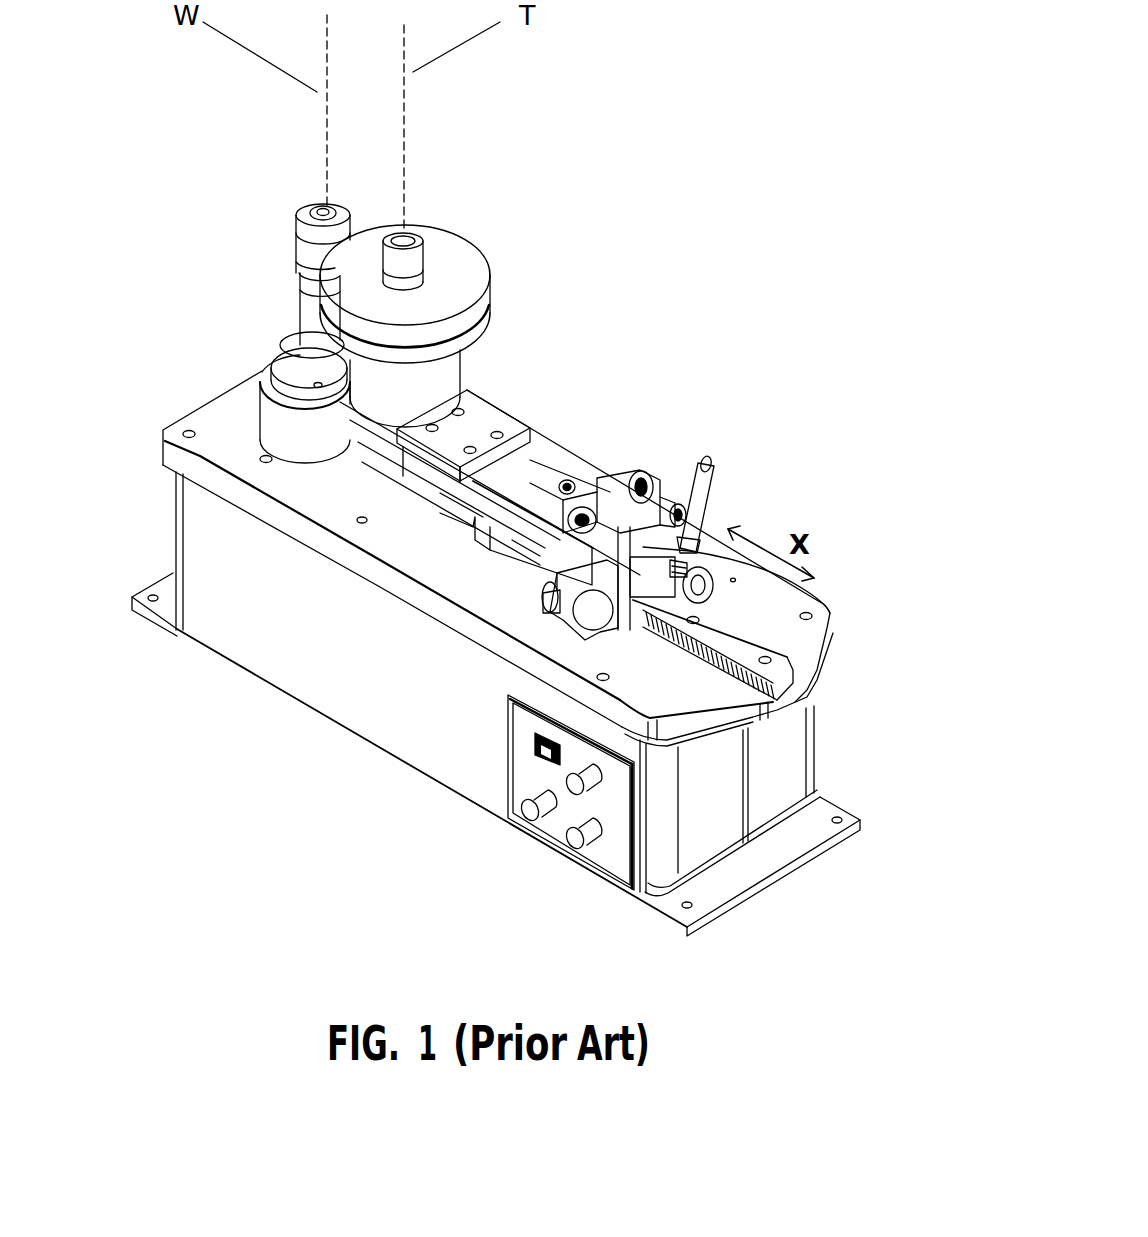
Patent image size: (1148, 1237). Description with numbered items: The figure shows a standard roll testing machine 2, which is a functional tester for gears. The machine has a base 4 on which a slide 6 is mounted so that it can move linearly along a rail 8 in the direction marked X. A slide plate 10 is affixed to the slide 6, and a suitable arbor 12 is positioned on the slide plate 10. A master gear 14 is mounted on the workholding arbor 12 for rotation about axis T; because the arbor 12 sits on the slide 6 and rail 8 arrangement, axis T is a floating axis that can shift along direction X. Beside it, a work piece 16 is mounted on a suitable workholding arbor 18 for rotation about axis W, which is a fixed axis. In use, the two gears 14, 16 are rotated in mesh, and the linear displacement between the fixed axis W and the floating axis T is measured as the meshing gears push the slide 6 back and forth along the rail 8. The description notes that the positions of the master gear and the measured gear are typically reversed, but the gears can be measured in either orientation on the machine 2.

The roll testing machine 2 is at (740, 412).
The base 4 is at (315, 610).
The slide 6 is at (463, 495).
The rail 8 is at (740, 648).
The slide plate 10 is at (463, 423).
The arbor 12 is at (435, 376).
The master gear 14 is at (450, 262).
The work piece 16 is at (307, 255).
The workholding arbor 18 is at (310, 337).